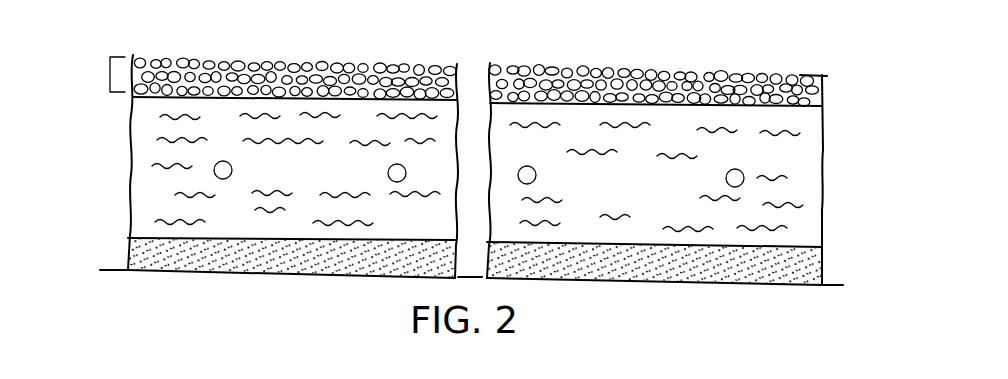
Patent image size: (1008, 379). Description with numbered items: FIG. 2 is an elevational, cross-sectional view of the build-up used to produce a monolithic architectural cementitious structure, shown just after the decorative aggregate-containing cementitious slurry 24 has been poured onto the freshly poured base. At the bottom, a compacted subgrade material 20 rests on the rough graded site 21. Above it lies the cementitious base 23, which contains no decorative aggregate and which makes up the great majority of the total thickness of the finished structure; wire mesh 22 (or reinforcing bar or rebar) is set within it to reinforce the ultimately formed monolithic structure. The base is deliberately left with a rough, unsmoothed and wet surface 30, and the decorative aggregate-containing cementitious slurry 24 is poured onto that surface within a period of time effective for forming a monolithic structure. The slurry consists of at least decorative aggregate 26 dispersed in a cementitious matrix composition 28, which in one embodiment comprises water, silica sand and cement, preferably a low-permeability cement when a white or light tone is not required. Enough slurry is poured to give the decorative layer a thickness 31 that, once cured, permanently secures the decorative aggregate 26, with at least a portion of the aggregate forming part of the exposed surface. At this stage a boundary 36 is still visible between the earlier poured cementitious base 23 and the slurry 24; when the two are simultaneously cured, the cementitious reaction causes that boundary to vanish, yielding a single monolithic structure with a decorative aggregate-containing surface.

The compacted subgrade material 20 is at (147, 257).
The rough graded site 21 is at (829, 285).
The wire mesh 22 is at (388, 175).
The cementitious base 23 is at (158, 198).
The decorative aggregate-containing cementitious slurry 24 is at (828, 78).
The decorative aggregate 26 is at (157, 93).
The cementitious matrix composition 28 is at (388, 72).
The rough, unsmoothed and wet surface 30 is at (200, 97).
The thickness 31 is at (110, 72).
The boundary 36 is at (792, 105).